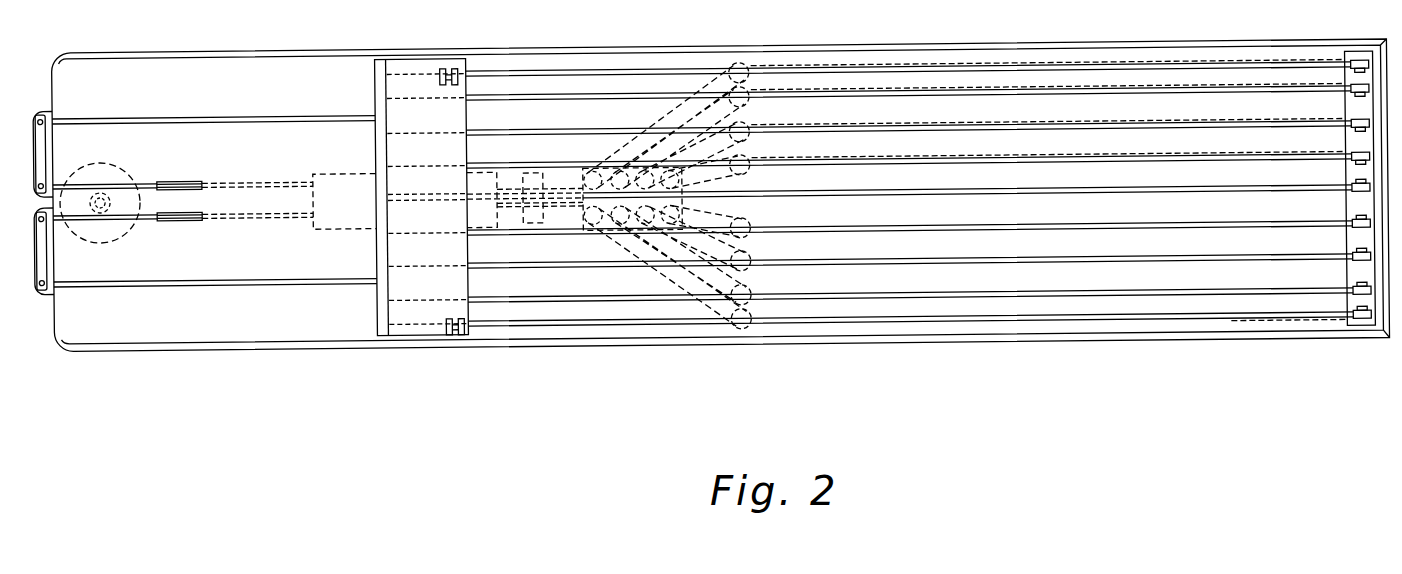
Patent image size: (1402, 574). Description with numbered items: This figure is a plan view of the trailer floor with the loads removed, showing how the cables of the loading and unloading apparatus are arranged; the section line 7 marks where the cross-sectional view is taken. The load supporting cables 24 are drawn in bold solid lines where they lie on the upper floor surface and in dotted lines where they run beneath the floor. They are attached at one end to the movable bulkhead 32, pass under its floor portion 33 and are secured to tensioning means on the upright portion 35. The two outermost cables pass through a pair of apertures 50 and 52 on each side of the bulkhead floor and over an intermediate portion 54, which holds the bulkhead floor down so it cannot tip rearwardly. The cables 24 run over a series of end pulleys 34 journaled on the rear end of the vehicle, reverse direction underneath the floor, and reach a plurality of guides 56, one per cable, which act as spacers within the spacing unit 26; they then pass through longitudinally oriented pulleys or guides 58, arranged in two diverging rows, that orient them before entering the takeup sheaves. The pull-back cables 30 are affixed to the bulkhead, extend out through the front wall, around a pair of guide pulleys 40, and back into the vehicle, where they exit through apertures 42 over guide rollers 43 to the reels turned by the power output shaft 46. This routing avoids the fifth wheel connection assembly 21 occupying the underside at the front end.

The section line 7- 7 is at (358, 58).
The fifth wheel connection assembly 21 is at (103, 160).
The load supporting cables 24 is at (552, 68).
The spacing unit 26 is at (620, 147).
The pull-back cables 30 is at (208, 111).
The movable bulkhead 32 is at (375, 84).
The floor portion 33 is at (427, 199).
The end pulleys 34 is at (1350, 127).
The upright portion 35 is at (375, 247).
The guide pulleys 40 is at (38, 126).
The apertures 42 is at (200, 175).
The guide rollers 43 is at (182, 176).
The power output shaft 46 is at (178, 197).
The aperture 50 is at (443, 64).
The aperture 52 is at (455, 64).
The intermediate portion 54 is at (441, 82).
The guides 56 is at (750, 321).
The pulleys or guides 58 is at (597, 165).